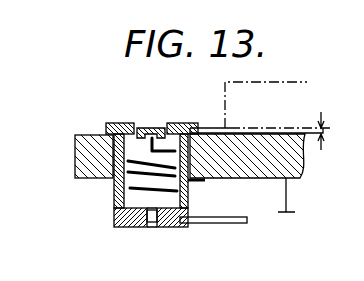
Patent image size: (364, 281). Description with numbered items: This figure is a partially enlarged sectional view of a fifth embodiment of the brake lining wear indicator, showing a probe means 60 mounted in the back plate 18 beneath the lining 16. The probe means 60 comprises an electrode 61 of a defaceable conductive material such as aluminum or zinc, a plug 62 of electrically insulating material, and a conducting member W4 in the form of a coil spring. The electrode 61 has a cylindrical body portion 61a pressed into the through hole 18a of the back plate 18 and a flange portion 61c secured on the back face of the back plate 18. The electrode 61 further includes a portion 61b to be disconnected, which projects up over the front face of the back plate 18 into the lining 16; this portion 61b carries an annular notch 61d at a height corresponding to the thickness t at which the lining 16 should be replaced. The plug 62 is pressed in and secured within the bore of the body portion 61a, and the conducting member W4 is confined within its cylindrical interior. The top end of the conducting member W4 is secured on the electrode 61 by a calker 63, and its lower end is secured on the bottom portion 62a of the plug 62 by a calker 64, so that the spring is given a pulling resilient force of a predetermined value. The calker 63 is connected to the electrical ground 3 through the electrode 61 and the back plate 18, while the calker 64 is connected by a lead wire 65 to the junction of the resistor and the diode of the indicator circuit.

The electrical ground 3 is at (287, 217).
The lining 16 is at (306, 81).
The back plate 18 is at (298, 169).
The through hole 18a is at (190, 158).
The probe means 60 is at (92, 126).
The electrode 61 is at (146, 173).
The cylindrical body portion 61a is at (113, 198).
The portion to be disconnected 61b is at (177, 122).
The flange portion 61c is at (196, 183).
The annular notch 61d is at (129, 123).
The plug 62 is at (113, 217).
The bottom portion 62a is at (167, 227).
The calker 63 is at (150, 128).
The calker 64 is at (142, 226).
The lead wire 65 is at (206, 224).
The conducting member W4 is at (112, 184).
The thickness t is at (330, 131).